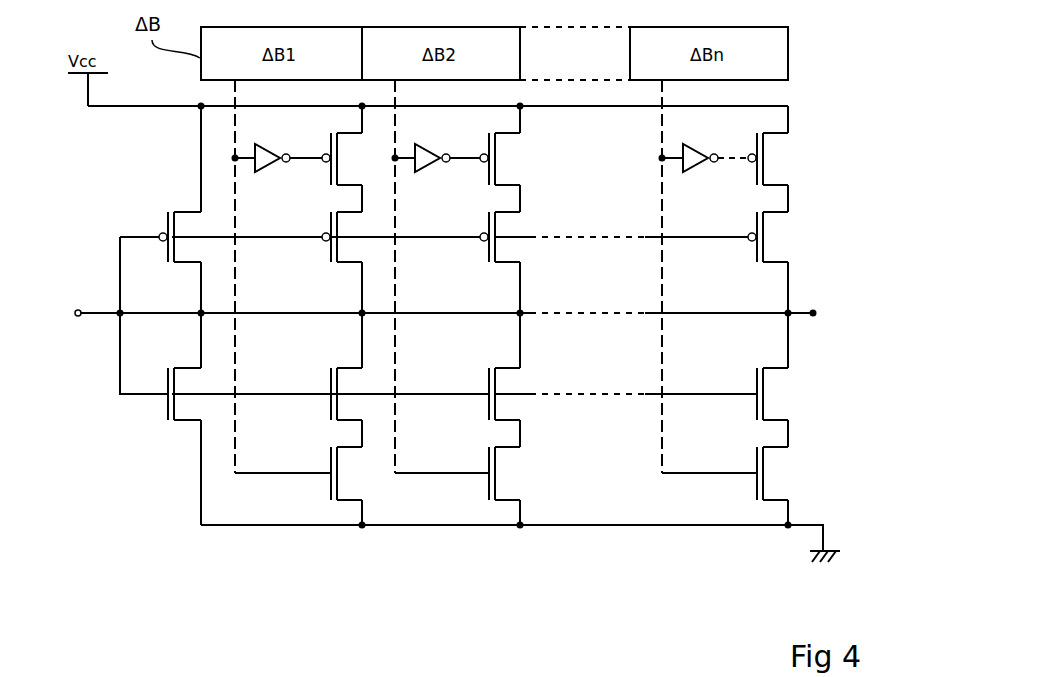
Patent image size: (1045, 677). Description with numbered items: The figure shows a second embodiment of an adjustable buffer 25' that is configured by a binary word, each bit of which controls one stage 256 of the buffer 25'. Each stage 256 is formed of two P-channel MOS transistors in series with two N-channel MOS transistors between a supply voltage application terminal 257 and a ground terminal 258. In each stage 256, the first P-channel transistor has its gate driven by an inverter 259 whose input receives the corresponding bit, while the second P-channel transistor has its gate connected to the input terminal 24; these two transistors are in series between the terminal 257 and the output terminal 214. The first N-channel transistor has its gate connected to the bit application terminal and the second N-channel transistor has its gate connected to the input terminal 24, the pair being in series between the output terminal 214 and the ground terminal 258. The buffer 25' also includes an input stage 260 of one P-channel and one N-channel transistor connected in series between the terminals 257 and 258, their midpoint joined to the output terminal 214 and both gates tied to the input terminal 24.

The input terminal 24 is at (425, 303).
The output terminal 214 is at (815, 303).
The adjustable buffer 25' is at (461, 578).
The stage 256 is at (347, 542).
The supply voltage application terminal 257 is at (82, 108).
The ground terminal 258 is at (800, 528).
The inverter 259 is at (268, 172).
The input stage 260 is at (181, 444).